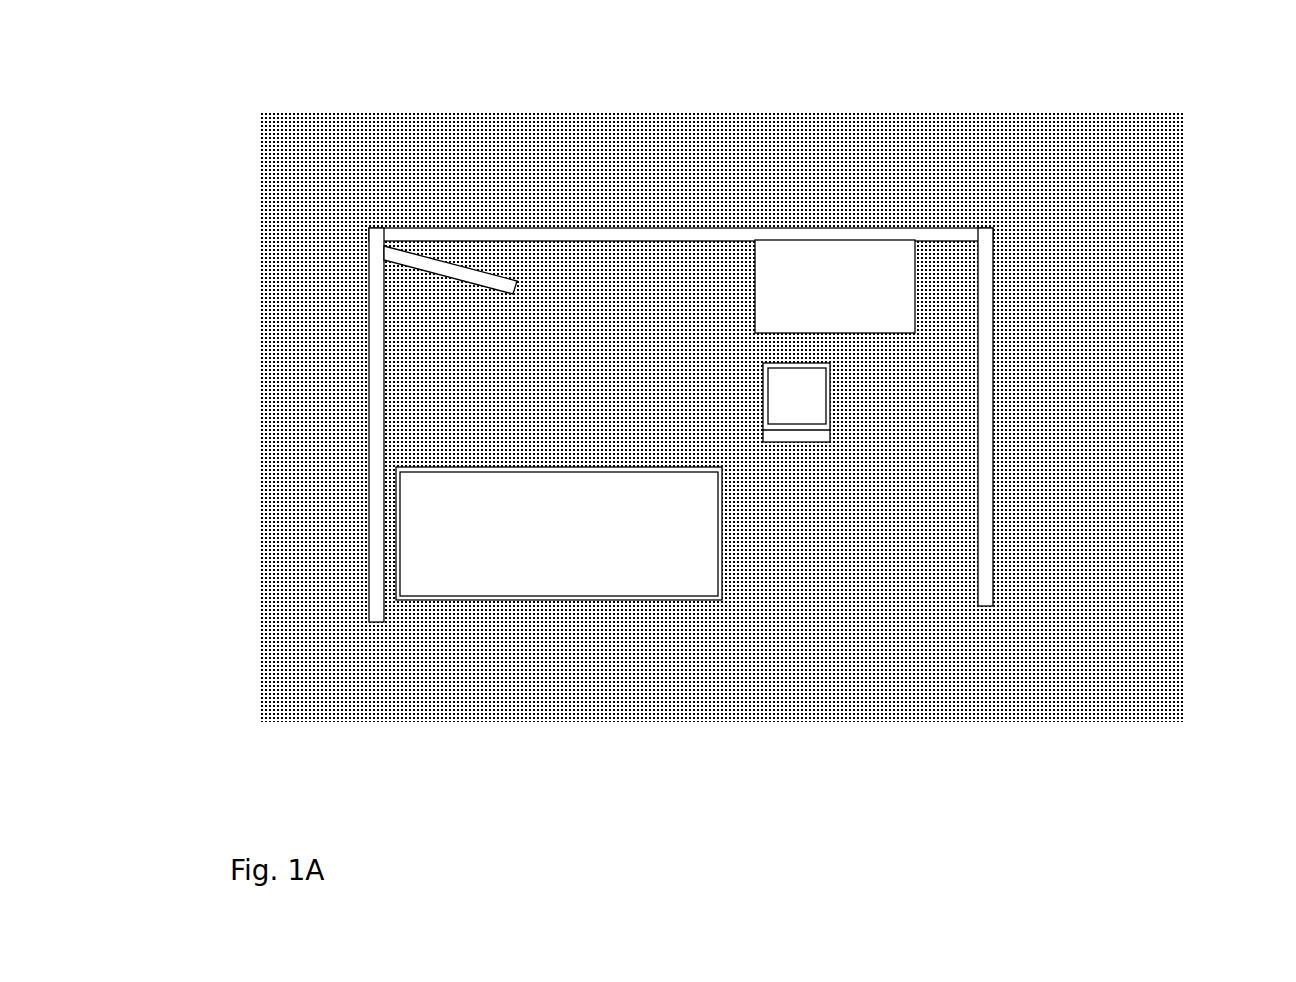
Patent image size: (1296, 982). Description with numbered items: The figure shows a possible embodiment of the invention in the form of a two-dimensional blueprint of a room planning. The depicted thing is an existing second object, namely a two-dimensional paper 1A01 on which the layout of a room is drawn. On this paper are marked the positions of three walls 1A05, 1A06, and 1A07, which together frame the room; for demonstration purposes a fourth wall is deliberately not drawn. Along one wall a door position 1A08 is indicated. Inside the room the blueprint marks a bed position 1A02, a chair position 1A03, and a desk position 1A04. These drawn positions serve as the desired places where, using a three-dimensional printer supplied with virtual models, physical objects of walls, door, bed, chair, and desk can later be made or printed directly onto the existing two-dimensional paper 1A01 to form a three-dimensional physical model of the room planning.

The 2D paper 1A01 is at (393, 107).
The bed position 1A02 is at (490, 612).
The chair position 1A03 is at (794, 452).
The desk position 1A04 is at (847, 277).
The wall 1A05 is at (670, 225).
The wall 1A06 is at (358, 378).
The wall 1A07 is at (1013, 426).
The door position 1A08 is at (452, 282).